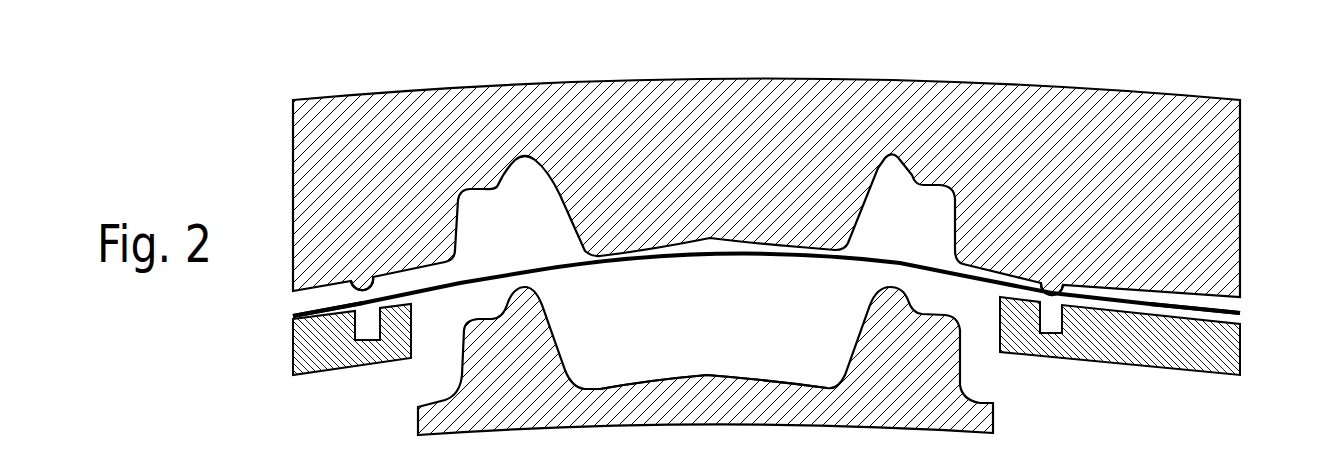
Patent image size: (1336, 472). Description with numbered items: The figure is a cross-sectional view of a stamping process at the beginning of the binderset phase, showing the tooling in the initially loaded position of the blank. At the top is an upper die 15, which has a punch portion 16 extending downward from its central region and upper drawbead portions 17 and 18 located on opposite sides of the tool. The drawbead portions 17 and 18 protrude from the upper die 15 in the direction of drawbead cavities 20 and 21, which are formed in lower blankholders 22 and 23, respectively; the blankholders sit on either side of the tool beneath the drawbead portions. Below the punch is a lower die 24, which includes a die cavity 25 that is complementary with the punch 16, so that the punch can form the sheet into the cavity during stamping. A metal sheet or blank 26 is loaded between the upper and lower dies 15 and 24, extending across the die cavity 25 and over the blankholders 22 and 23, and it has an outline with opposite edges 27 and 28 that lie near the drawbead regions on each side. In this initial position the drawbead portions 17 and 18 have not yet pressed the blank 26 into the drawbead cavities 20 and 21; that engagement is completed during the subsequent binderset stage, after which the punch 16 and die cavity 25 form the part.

The upper die 15 is at (1203, 148).
The punch portion 16 is at (806, 122).
The upper drawbead portion 17 is at (1052, 283).
The upper drawbead portion 18 is at (362, 288).
The drawbead cavity 20 is at (1052, 331).
The drawbead cavity 21 is at (372, 325).
The lower blankholder 22 is at (1224, 352).
The lower blankholder 23 is at (291, 350).
The lower die 24 is at (960, 412).
The die cavity 25 is at (788, 383).
The blank 26 is at (586, 265).
The edge 27 is at (293, 314).
The edge 28 is at (1242, 311).